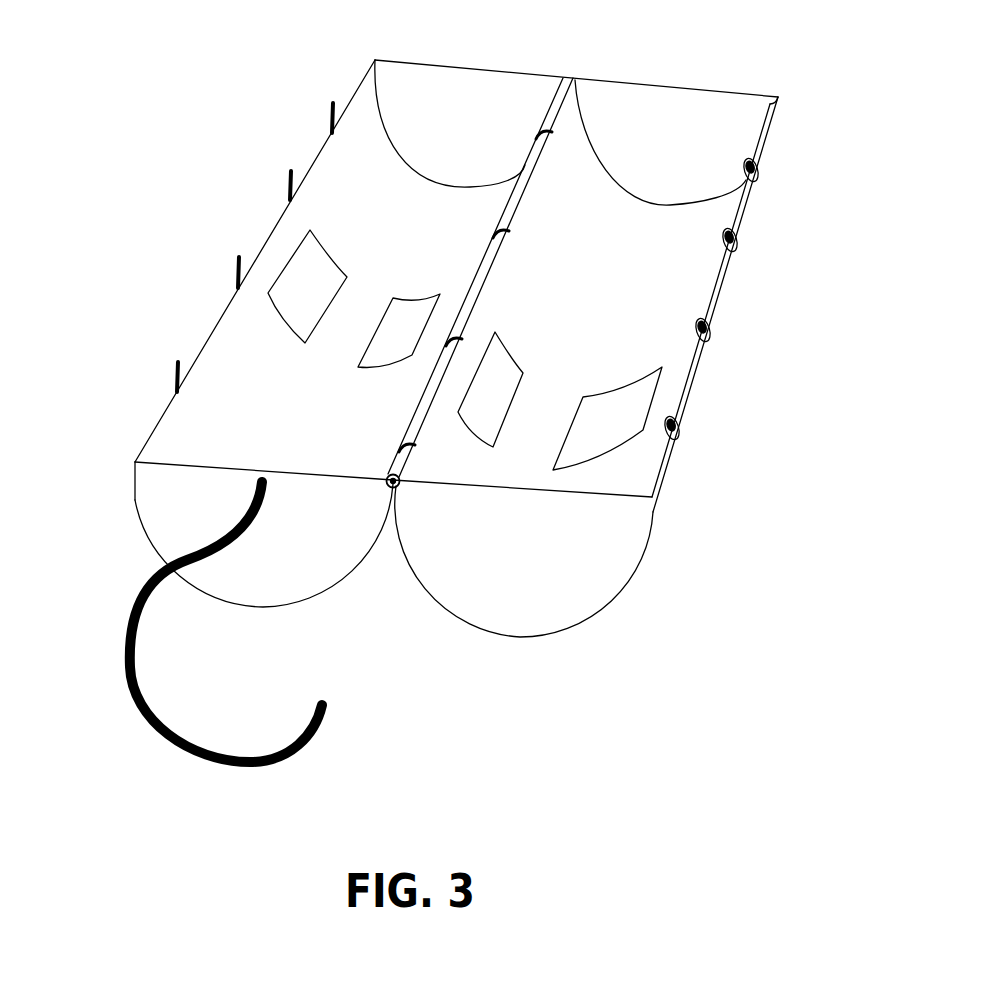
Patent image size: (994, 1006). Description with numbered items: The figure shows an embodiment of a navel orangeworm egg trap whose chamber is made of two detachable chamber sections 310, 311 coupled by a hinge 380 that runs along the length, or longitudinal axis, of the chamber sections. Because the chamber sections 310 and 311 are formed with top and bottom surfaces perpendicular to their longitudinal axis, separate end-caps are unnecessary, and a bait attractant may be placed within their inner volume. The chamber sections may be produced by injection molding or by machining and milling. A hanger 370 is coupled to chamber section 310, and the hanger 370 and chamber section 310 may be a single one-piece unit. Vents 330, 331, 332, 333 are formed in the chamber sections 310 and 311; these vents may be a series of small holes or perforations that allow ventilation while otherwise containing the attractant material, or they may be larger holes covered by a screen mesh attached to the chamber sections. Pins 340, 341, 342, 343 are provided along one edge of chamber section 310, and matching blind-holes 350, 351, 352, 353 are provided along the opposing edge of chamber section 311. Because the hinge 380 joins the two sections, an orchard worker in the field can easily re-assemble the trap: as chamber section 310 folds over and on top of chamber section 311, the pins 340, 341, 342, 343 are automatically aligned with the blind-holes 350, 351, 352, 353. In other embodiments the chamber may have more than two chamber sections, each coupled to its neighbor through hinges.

The chamber section 310 is at (135, 503).
The chamber section 311 is at (653, 513).
The vent 330 is at (308, 287).
The vent 331 is at (410, 318).
The vent 332 is at (495, 398).
The vent 333 is at (590, 428).
The pin 340 is at (332, 103).
The pin 341 is at (289, 173).
The pin 342 is at (238, 258).
The pin 343 is at (177, 362).
The blind-hole 350 is at (758, 169).
The blind-hole 351 is at (737, 229).
The blind-hole 352 is at (710, 322).
The blind-hole 353 is at (679, 416).
The hanger 370 is at (142, 613).
The hinge 380 is at (393, 490).